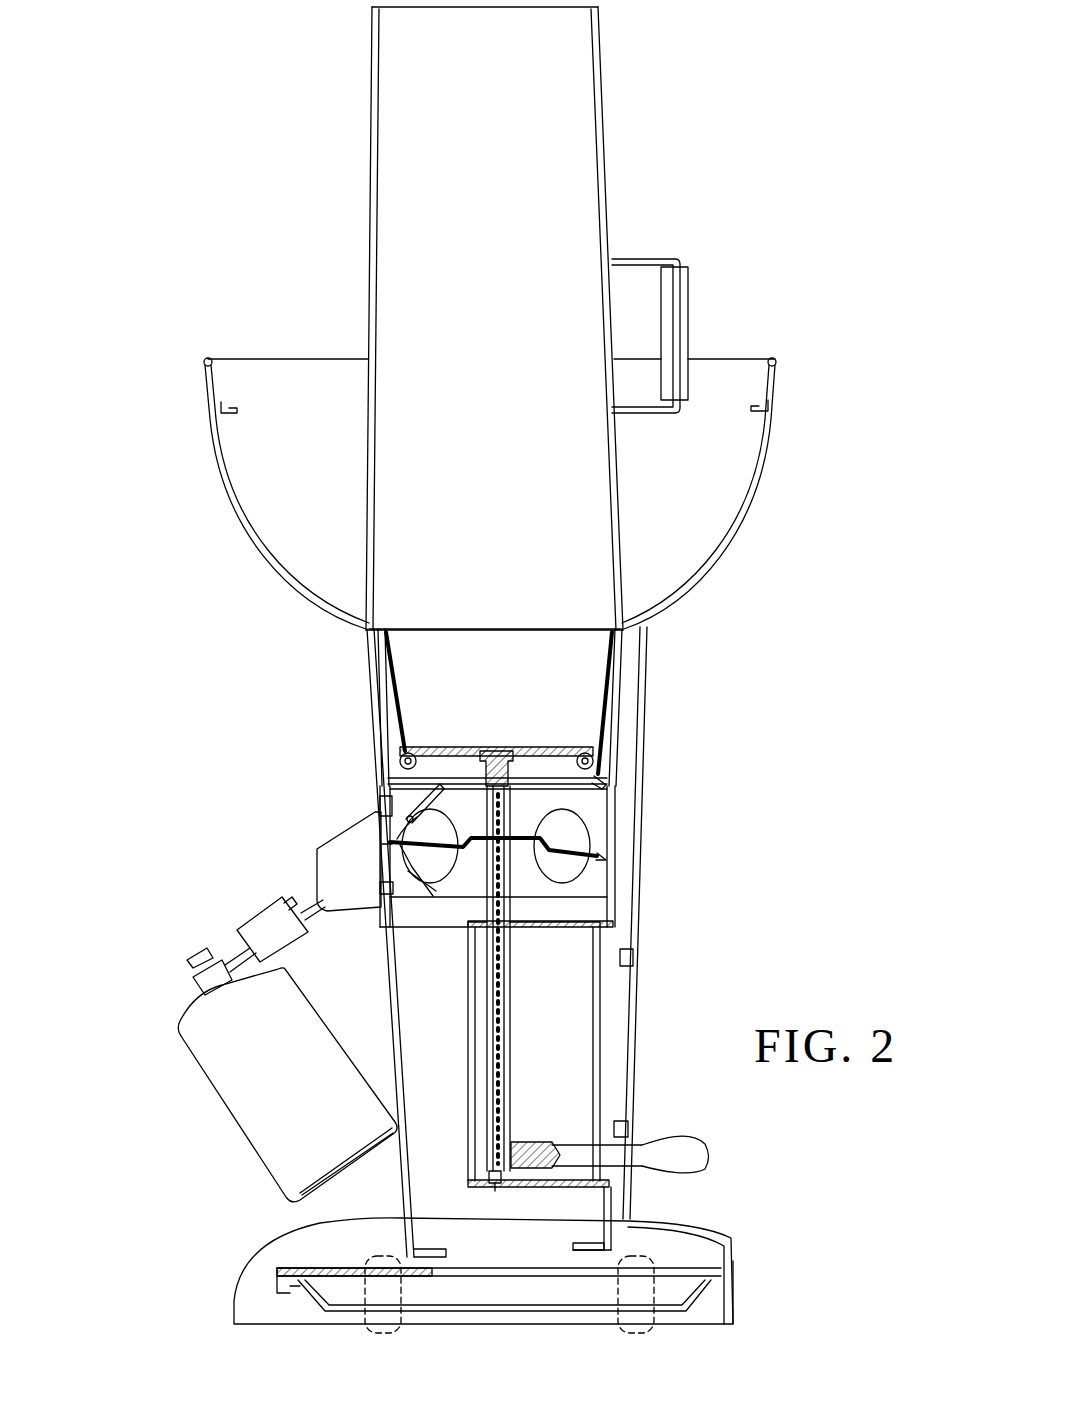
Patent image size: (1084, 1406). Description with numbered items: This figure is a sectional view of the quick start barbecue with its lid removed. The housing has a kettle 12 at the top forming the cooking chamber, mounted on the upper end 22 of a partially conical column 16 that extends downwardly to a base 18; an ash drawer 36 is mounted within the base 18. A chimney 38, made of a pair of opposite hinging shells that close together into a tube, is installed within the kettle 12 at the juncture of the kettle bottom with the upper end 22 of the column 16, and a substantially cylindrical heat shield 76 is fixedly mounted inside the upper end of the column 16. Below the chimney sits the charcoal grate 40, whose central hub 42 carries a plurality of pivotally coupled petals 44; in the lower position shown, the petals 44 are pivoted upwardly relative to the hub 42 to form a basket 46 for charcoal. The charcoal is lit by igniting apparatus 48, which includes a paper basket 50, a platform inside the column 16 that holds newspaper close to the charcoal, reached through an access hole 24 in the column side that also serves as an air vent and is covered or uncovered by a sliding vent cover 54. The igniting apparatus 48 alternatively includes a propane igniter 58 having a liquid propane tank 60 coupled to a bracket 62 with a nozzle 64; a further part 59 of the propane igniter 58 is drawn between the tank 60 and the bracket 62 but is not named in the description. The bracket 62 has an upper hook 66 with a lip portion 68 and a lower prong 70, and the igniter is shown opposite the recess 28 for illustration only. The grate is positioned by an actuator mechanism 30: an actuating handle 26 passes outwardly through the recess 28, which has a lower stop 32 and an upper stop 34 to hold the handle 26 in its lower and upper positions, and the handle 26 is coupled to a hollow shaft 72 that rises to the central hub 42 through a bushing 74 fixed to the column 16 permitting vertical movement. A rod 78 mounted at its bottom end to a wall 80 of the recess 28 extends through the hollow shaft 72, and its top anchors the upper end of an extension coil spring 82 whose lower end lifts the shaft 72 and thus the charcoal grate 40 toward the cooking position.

The kettle 12 is at (717, 556).
The column 16 is at (643, 802).
The base 18 is at (247, 1292).
The upper end 22 is at (371, 643).
The access hole 24 is at (379, 892).
The actuating handle 26 is at (701, 1162).
The recess 28 is at (597, 1042).
The actuator mechanism 30 is at (512, 1115).
The lower stop 32 is at (627, 1131).
The upper stop 34 is at (635, 960).
The ash drawer 36 is at (727, 1262).
The chimney 38 is at (373, 209).
The charcoal grate 40 is at (457, 746).
The central hub 42 is at (497, 749).
The petals 44 is at (400, 692).
The basket 46 is at (487, 628).
The igniting apparatus 48 is at (301, 854).
The paper basket 50 is at (601, 868).
The vent cover 54 is at (601, 907).
The propane igniter 58 is at (201, 1075).
The pump 59 is at (247, 931).
The liquid propane tank 60 is at (286, 1167).
The bracket 62 is at (326, 882).
The nozzle 64 is at (382, 849).
The upper hook 66 is at (382, 808).
The lip portion 68 is at (429, 805).
The lower prong 70 is at (395, 899).
The hollow shaft 72 is at (512, 987).
The bushing 74 is at (593, 800).
The heat shield 76 is at (613, 732).
The rod 78 is at (506, 1180).
The wall 80 is at (483, 1182).
The extension coil spring 82 is at (512, 1038).